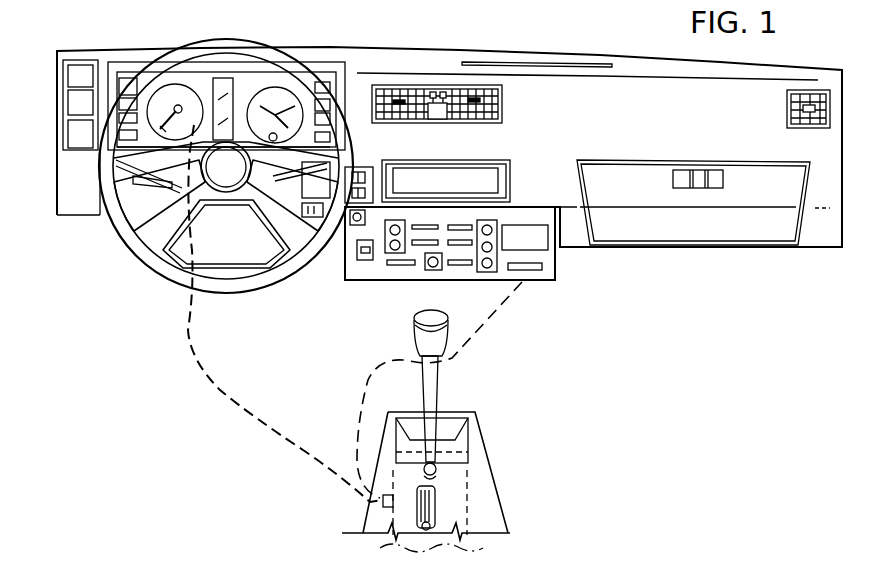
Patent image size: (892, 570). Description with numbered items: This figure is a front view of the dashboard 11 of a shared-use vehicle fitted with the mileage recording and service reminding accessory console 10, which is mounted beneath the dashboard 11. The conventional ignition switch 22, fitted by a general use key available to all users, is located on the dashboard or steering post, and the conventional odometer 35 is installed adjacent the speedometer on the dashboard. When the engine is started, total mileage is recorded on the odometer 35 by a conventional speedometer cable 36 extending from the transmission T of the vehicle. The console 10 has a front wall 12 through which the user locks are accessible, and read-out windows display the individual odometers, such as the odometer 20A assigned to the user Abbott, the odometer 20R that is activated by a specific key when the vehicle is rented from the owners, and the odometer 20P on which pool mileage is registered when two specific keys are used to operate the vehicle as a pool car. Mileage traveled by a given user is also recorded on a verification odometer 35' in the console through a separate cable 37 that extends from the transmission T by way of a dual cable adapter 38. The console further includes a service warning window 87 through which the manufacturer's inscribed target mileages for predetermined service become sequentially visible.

The shared-use console 10 is at (547, 288).
The dashboard 11 is at (458, 30).
The front wall 12 is at (525, 218).
The odometer 20A is at (430, 224).
The odometer 20R is at (405, 268).
The odometer 20P is at (462, 268).
The ignition switch 22 is at (303, 208).
The odometer 35 is at (173, 80).
The verification odometer 35' is at (522, 296).
The speedometer cable 36 is at (288, 443).
The cable 37 is at (356, 458).
The dual cable adapter 38 is at (382, 504).
The service warning window 87 is at (357, 252).
The transmission T is at (470, 493).